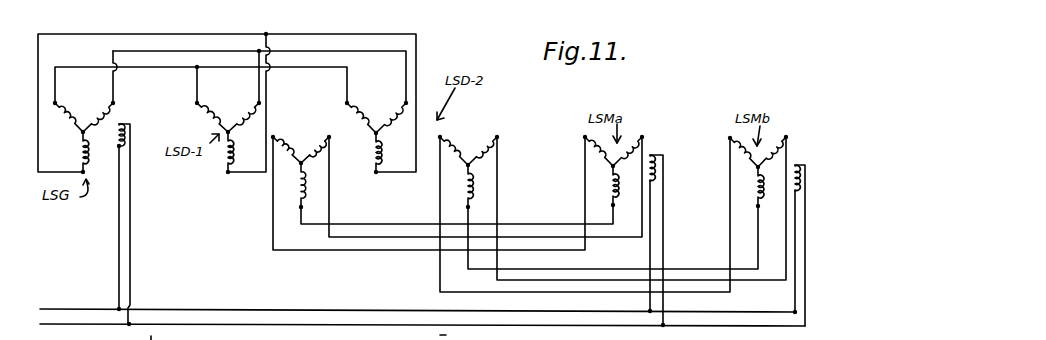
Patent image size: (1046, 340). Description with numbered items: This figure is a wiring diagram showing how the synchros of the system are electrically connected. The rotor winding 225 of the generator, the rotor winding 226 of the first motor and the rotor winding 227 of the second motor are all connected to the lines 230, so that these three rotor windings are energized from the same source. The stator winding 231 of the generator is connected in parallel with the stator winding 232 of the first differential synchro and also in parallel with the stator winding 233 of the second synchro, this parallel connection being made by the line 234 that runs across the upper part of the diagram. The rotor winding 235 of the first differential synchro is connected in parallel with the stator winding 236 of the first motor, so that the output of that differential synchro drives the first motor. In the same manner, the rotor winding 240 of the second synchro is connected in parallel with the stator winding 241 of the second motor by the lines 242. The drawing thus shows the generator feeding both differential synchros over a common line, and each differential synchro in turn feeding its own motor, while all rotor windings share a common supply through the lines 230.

The rotor winding 225 is at (117, 147).
The rotor winding 226 is at (663, 154).
The rotor winding 227 is at (802, 163).
The lines 230 is at (248, 318).
The stator winding 231 is at (112, 111).
The stator winding 232 is at (205, 119).
The stator winding 233 is at (352, 116).
The line 234 is at (161, 25).
The rotor winding 235 is at (313, 146).
The stator winding 236 is at (356, 243).
The rotor winding 240 is at (481, 140).
The stator winding 241 is at (743, 141).
The lines 242 is at (688, 278).